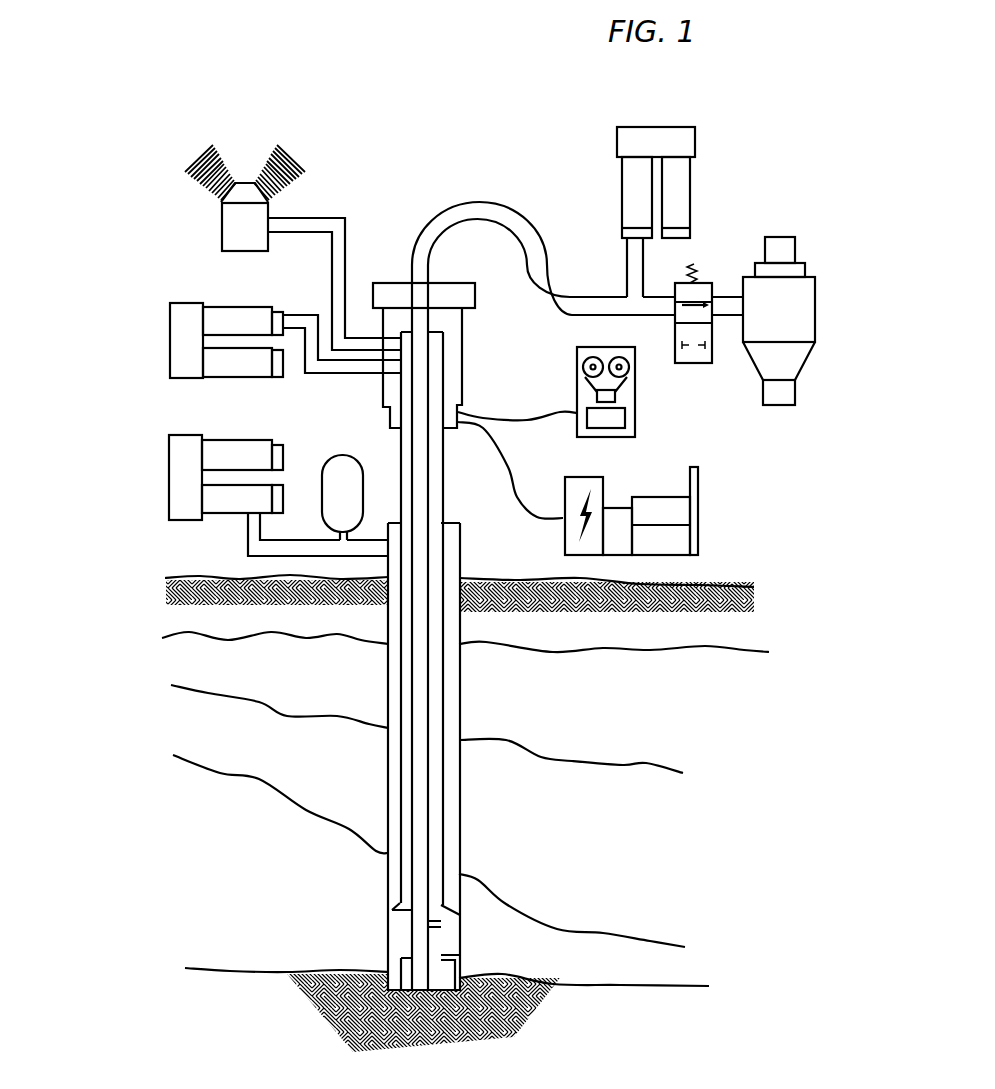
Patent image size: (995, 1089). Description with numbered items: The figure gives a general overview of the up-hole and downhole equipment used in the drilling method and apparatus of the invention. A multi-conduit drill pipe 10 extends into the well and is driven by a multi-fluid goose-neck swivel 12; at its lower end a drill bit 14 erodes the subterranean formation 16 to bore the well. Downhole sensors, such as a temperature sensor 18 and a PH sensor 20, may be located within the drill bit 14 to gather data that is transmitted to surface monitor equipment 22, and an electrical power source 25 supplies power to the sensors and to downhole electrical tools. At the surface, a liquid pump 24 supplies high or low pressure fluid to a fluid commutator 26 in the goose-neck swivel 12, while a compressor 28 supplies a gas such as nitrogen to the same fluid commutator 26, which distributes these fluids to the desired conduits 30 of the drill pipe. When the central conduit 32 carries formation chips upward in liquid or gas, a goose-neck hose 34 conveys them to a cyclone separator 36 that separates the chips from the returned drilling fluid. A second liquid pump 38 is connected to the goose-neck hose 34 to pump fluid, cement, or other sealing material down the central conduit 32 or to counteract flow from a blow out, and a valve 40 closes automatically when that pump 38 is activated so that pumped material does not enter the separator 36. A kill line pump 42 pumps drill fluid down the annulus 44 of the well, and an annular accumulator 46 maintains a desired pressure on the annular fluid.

The multi-conduit drill pipe 10 is at (388, 672).
The multi-fluid goose-neck swivel 12 is at (475, 298).
The drill bit 14 is at (388, 932).
The subterranean formation 16 is at (307, 1029).
The temperature sensor 18 is at (460, 960).
The PH sensor 20 is at (460, 923).
The surface monitor equipment 22 is at (635, 403).
The liquid pump 24 is at (170, 341).
The electrical power source 25 is at (698, 522).
The fluid commutator 26 is at (445, 357).
The compressor 28 is at (222, 230).
The conduits 30 is at (403, 461).
The central conduit 32 is at (425, 489).
The goose-neck hose 34 is at (540, 237).
The cyclone separator 36 is at (815, 316).
The liquid pump 38 is at (695, 148).
The valve 40 is at (712, 285).
The kill line pump 42 is at (177, 477).
The annulus 44 is at (460, 548).
The annular accumulator 46 is at (340, 465).